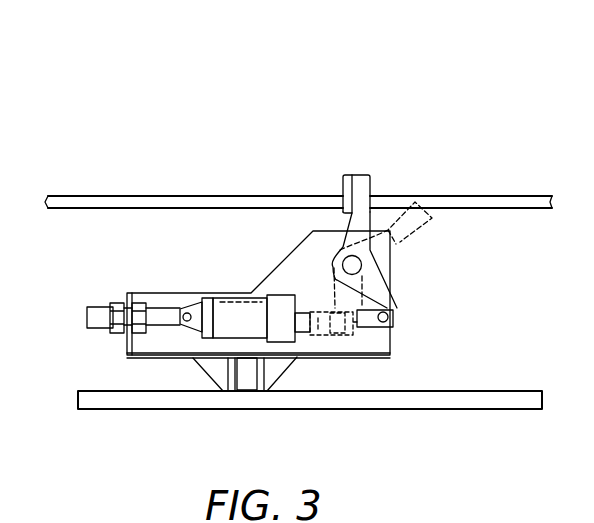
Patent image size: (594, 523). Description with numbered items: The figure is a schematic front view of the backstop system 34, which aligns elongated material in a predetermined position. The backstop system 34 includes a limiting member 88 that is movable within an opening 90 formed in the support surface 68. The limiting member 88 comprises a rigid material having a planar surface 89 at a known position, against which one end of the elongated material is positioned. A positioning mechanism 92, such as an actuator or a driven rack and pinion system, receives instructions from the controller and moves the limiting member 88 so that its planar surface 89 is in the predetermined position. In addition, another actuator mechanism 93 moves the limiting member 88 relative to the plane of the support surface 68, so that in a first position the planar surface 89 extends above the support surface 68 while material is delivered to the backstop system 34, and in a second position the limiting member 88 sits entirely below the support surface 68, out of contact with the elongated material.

The backstop system 34 is at (181, 101).
The support surface 68 is at (497, 197).
The limiting member 88 is at (362, 178).
The planar surface 89 is at (338, 182).
The opening 90 is at (448, 203).
The positioning mechanism 92 is at (248, 383).
The actuator mechanism 93 is at (237, 305).